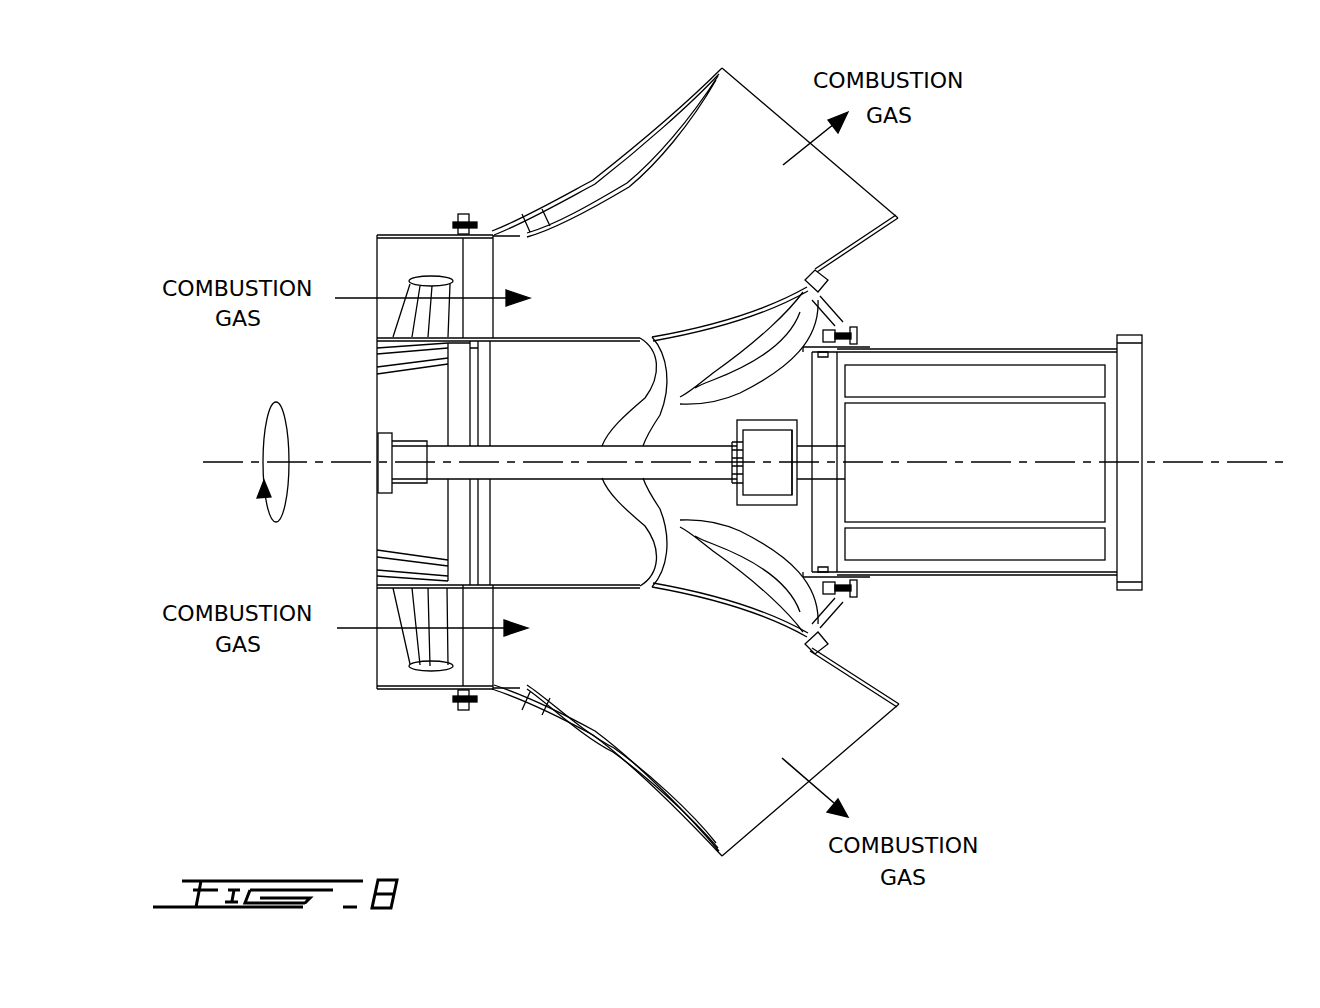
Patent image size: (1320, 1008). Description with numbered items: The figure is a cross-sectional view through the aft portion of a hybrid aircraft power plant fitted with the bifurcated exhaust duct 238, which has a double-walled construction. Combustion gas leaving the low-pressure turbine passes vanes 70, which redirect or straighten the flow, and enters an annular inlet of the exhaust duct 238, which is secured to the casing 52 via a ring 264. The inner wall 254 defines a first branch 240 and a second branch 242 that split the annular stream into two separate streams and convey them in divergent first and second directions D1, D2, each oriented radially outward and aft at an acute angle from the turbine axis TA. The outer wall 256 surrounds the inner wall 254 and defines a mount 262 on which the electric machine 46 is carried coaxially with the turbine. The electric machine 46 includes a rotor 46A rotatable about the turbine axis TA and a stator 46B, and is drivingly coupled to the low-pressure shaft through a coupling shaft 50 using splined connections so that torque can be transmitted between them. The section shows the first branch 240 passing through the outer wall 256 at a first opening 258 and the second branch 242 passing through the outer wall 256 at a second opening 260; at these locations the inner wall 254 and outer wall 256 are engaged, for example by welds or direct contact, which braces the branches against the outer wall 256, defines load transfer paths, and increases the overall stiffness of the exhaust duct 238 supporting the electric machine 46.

The electric machine 46 is at (1028, 503).
The rotor 46A is at (1105, 490).
The stator 46B is at (1105, 378).
The coupling shaft 50 is at (428, 455).
The casing 52 is at (393, 234).
The vanes 70 is at (403, 310).
The bifurcated exhaust duct 238 is at (746, 465).
The first branch 240 is at (745, 173).
The second branch 242 is at (752, 754).
The inner wall 254 is at (898, 707).
The outer wall 256 is at (565, 207).
The first opening 258 is at (672, 108).
The second opening 260 is at (669, 825).
The mount 262 is at (860, 596).
The ring 264 is at (483, 667).
The turbine axis TA is at (220, 458).
The first direction D1 is at (828, 133).
The second direction D2 is at (830, 790).